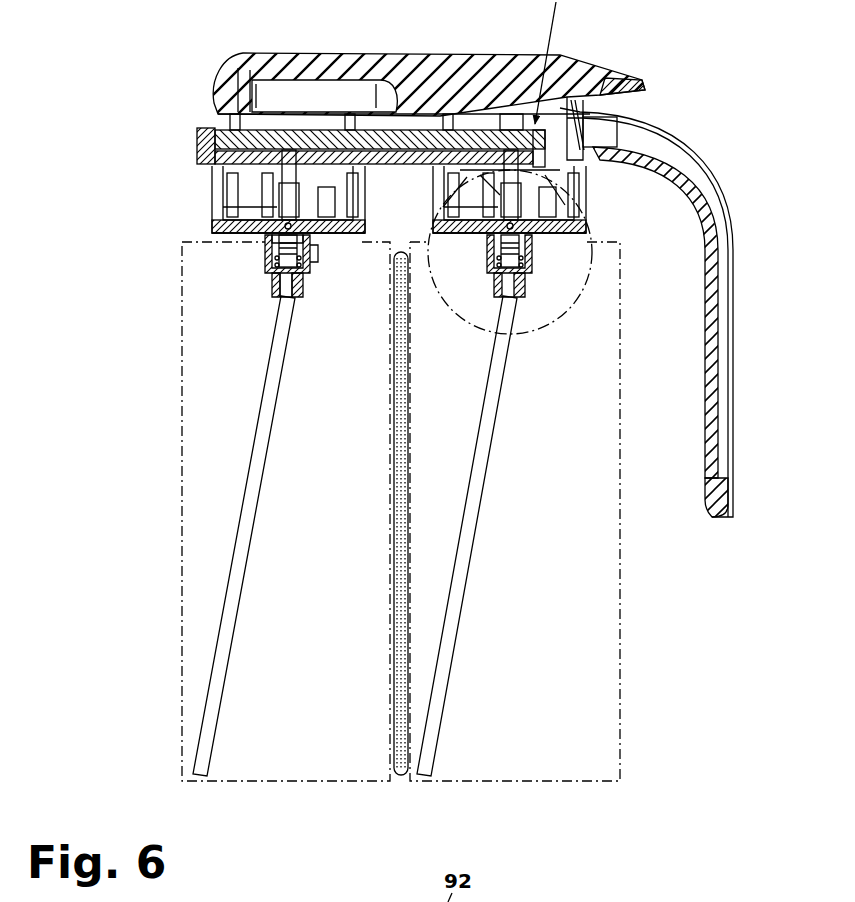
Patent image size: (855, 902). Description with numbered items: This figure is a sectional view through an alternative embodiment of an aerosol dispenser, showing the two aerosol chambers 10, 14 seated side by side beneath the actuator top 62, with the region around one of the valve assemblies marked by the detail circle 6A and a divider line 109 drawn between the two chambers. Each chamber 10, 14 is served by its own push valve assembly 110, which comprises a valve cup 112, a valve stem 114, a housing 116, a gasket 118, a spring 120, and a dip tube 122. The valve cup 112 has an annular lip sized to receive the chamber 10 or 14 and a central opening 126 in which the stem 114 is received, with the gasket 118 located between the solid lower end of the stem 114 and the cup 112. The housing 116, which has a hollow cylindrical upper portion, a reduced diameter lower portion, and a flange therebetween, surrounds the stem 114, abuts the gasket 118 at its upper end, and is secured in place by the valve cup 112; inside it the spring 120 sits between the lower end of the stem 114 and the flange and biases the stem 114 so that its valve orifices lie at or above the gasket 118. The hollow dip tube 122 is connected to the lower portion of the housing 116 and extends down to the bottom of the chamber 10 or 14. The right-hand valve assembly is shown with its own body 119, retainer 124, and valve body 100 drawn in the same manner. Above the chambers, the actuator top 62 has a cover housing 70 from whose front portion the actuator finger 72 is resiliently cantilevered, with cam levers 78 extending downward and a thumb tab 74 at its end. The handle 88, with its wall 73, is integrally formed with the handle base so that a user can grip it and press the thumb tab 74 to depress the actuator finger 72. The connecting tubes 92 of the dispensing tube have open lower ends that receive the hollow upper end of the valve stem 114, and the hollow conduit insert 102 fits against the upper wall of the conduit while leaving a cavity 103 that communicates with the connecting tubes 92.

The aerosol chamber 10 is at (183, 624).
The aerosol chamber 14 is at (620, 652).
The actuator top 62 is at (212, 76).
The cover housing 70 is at (207, 116).
The actuator finger 72 is at (575, 95).
The handle wall 73 is at (620, 112).
The thumb tab 74 is at (642, 84).
The cam levers 78 is at (367, 85).
The handle 88 is at (728, 283).
The connecting tubes 92 is at (532, 168).
The plate end 100 is at (197, 137).
The hollow conduit insert 102 is at (203, 122).
The cavity 103 is at (200, 170).
The divider wall 109 is at (403, 707).
The push valve assembly 110 is at (268, 283).
The valve cup 112 is at (266, 239).
The valve stem 114 is at (213, 204).
The housing 116 is at (281, 300).
The gasket 118 is at (262, 262).
The valve body 119 is at (533, 251).
The spring 120 is at (275, 294).
The dip tube 122 is at (240, 541).
The retainer 124 is at (312, 250).
The opening 126 is at (212, 232).
The detail circle 6A is at (573, 320).